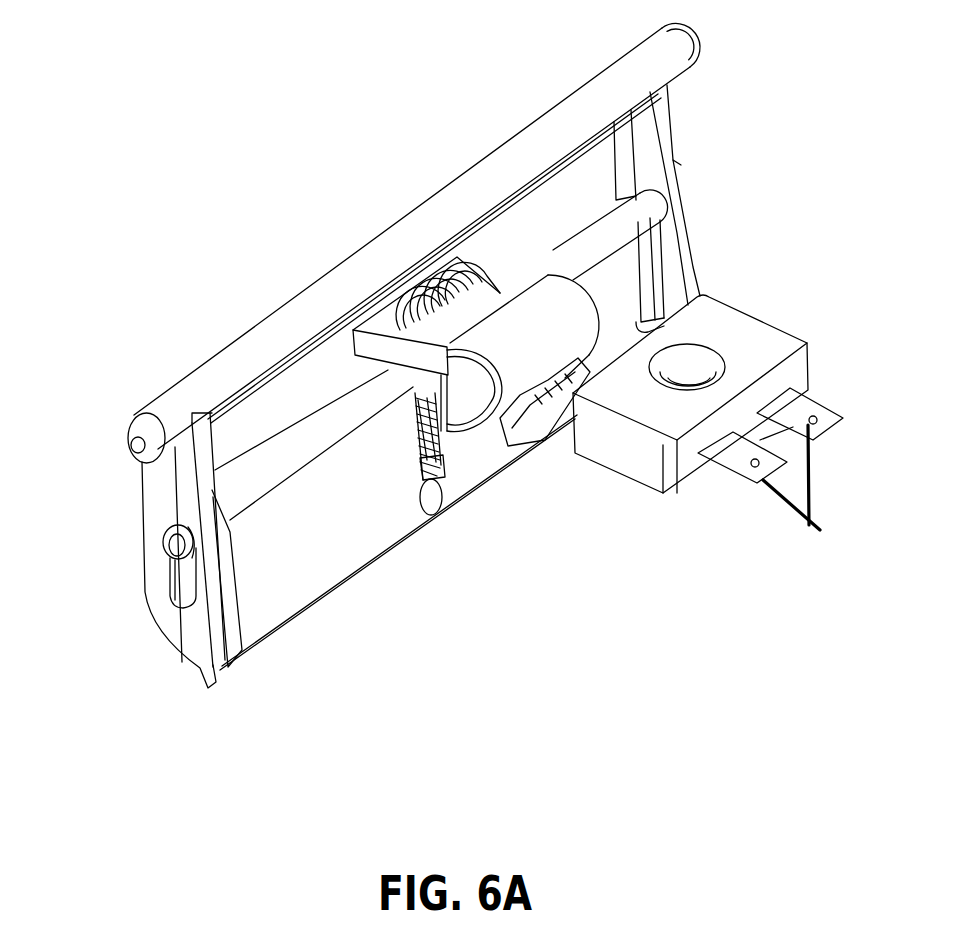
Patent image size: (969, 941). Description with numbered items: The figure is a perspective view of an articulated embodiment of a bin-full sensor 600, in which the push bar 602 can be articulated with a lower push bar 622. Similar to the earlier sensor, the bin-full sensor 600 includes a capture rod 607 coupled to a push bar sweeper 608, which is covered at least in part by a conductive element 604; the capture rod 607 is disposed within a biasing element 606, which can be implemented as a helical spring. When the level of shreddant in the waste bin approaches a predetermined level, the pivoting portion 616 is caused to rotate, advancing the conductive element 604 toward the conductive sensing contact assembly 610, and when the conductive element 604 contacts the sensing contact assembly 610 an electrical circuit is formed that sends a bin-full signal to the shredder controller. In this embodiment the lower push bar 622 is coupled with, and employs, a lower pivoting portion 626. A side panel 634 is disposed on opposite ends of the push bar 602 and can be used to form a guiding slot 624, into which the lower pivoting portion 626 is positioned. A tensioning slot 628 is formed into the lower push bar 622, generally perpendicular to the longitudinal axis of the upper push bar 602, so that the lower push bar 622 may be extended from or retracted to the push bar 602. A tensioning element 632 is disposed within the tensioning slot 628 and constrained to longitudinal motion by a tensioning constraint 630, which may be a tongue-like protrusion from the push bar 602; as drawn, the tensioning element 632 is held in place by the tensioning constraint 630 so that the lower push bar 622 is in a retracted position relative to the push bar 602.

The bin-full sensor 600 is at (312, 136).
The push bar 602 is at (145, 500).
The conductive element 604 is at (553, 320).
The biasing element 606 is at (422, 297).
The capture rod 607 is at (432, 313).
The push bar sweeper 608 is at (448, 385).
The sensing contact assembly 610 is at (530, 433).
The pivoting portion 616 is at (213, 358).
The lower push bar 622 is at (622, 272).
The guiding slot 624 is at (187, 590).
The lower pivoting portion 626 is at (175, 547).
The tensioning slot 628 is at (433, 497).
The tensioning constraint 630 is at (433, 467).
The tensioning element 632 is at (430, 394).
The side panel 634 is at (665, 145).